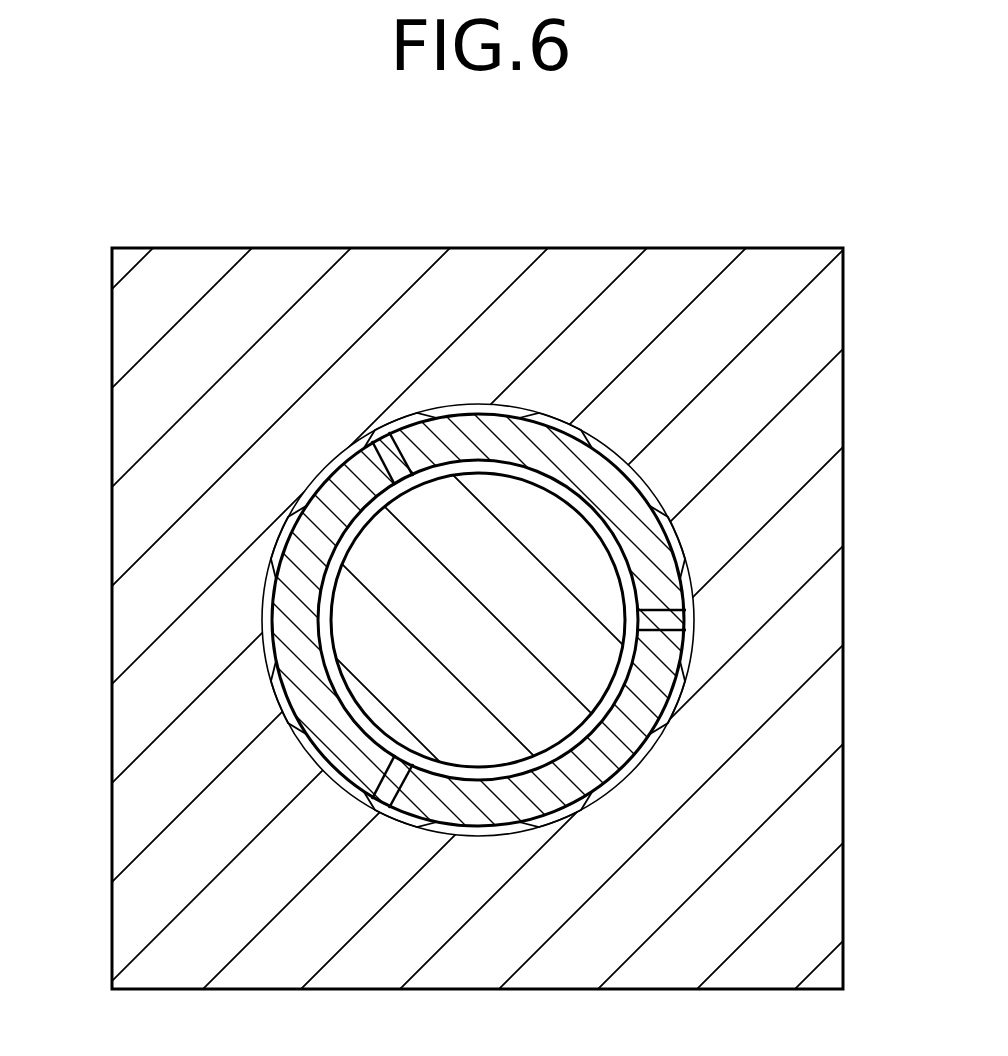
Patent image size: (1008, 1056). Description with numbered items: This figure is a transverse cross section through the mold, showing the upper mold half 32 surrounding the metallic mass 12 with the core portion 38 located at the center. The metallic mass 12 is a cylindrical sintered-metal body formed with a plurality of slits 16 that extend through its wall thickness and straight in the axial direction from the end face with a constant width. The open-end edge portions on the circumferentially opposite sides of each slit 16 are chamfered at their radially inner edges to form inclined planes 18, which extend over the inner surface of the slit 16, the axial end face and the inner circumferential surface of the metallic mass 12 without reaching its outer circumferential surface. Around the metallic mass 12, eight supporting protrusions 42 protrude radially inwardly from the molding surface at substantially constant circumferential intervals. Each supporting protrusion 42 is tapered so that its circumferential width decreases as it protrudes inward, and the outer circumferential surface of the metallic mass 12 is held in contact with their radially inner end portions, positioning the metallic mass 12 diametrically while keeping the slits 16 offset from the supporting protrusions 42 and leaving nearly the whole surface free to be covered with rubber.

The metallic mass 12 is at (625, 745).
The slit 16 is at (388, 465).
The inclined plane 18 is at (413, 462).
The upper mold half 32 is at (832, 292).
The core portion 38 is at (565, 545).
The supporting protrusion 42 is at (395, 420).